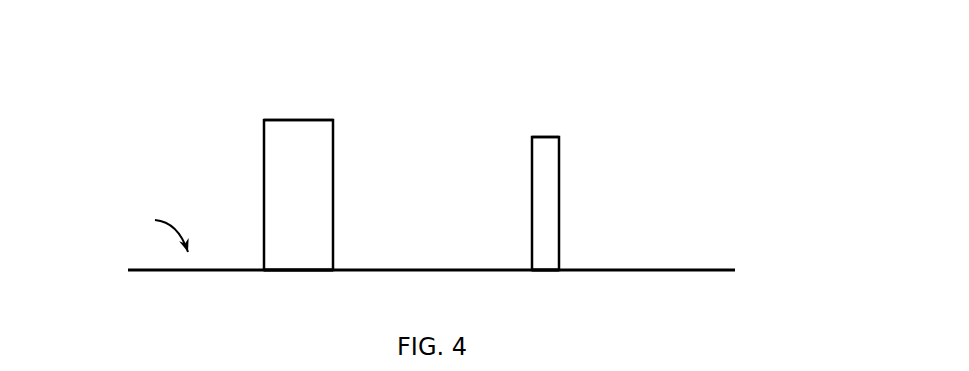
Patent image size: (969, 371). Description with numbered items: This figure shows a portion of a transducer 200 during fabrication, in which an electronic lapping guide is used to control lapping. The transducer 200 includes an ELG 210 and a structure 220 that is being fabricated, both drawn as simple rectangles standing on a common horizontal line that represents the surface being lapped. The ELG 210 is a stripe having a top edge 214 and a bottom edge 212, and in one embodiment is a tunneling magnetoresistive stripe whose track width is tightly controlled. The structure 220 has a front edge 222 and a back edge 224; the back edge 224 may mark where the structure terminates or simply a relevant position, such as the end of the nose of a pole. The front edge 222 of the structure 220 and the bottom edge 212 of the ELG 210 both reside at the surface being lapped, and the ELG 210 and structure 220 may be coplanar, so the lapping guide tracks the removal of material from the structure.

The transducer 200 is at (454, 73).
The ELG 210 is at (333, 168).
The bottom edge 212 is at (298, 278).
The top edge 214 is at (298, 113).
The structure 220 is at (560, 203).
The front edge 222 is at (550, 280).
The back edge 224 is at (549, 125).